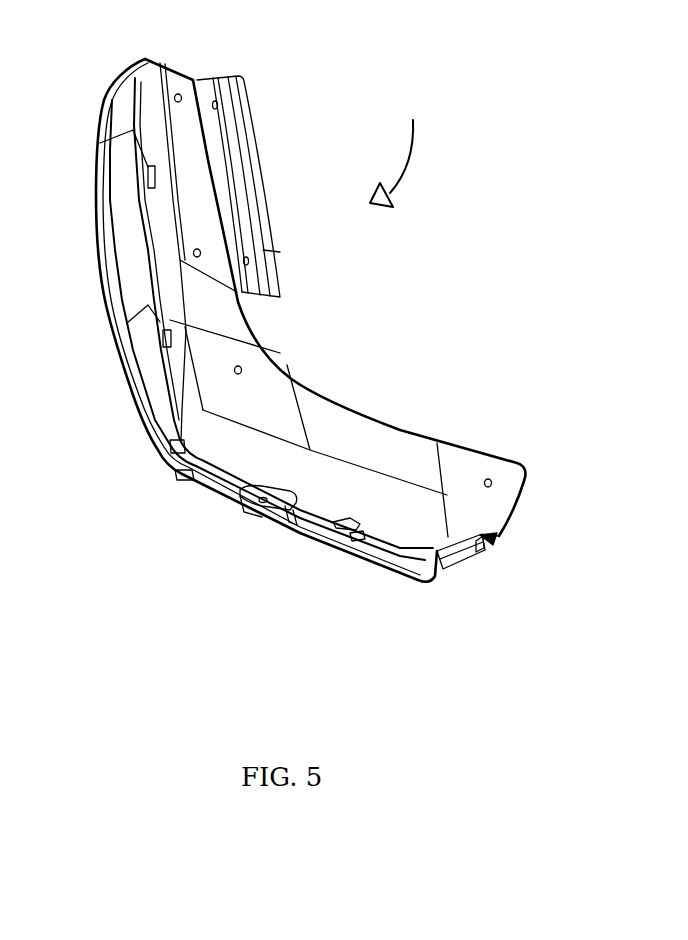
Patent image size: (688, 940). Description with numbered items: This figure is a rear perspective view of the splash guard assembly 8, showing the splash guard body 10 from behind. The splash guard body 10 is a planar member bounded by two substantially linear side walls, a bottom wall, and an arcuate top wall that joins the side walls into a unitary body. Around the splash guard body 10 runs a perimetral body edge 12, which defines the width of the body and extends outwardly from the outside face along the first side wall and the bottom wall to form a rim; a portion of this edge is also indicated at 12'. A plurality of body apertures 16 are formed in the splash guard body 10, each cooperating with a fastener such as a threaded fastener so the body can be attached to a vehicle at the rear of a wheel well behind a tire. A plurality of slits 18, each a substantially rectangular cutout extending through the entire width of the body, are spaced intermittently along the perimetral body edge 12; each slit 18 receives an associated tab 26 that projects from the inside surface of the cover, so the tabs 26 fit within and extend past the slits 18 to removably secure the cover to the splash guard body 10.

The splash guard assembly 8 is at (391, 146).
The splash guard body 10 is at (332, 424).
The perimetral body edge 12 is at (539, 515).
The frame member tip 12' is at (451, 585).
The body aperture 16 is at (182, 94).
The slit 18 is at (133, 130).
The tab 26 is at (148, 172).